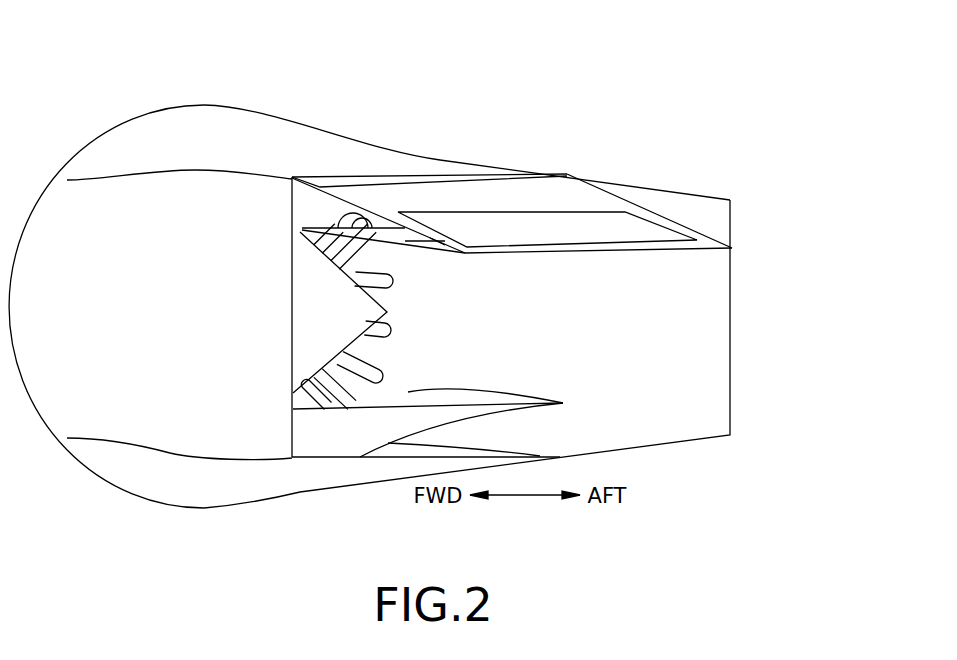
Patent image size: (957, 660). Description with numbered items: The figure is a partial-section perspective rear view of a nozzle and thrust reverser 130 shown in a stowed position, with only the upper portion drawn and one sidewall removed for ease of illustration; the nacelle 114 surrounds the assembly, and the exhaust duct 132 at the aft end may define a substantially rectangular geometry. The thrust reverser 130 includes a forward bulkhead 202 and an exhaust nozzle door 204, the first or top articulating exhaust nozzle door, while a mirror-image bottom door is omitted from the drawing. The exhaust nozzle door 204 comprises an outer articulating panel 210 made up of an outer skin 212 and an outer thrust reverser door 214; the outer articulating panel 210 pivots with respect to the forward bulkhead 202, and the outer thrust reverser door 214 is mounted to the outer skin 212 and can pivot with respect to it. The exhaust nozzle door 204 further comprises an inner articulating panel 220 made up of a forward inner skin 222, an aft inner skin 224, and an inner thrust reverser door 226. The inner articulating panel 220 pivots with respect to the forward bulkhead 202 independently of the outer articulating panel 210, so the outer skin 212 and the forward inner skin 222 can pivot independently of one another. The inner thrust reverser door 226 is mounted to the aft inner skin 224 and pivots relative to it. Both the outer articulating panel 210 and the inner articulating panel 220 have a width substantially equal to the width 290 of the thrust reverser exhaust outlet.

The nacelle 114 is at (247, 120).
The thrust reverser 130 is at (565, 82).
The exhaust duct 132 is at (730, 288).
The forward bulkhead 202 is at (300, 198).
The exhaust nozzle door 204 is at (618, 172).
The outer articulating panel 210 is at (501, 174).
The outer skin 212 is at (588, 180).
The outer thrust reverser door 214 is at (640, 226).
The inner articulating panel 220 is at (466, 270).
The forward inner skin 222 is at (300, 232).
The aft inner skin 224 is at (402, 243).
The inner thrust reverser door 226 is at (435, 245).
The width 290 is at (490, 267).